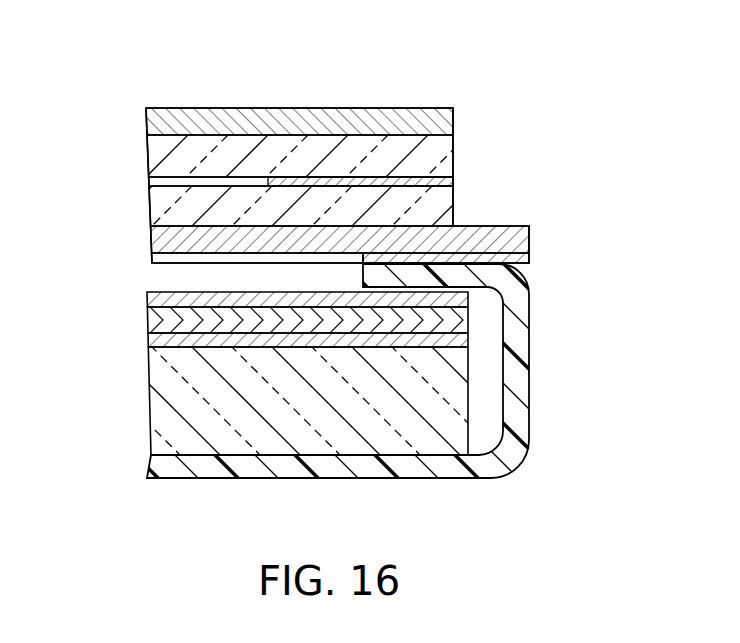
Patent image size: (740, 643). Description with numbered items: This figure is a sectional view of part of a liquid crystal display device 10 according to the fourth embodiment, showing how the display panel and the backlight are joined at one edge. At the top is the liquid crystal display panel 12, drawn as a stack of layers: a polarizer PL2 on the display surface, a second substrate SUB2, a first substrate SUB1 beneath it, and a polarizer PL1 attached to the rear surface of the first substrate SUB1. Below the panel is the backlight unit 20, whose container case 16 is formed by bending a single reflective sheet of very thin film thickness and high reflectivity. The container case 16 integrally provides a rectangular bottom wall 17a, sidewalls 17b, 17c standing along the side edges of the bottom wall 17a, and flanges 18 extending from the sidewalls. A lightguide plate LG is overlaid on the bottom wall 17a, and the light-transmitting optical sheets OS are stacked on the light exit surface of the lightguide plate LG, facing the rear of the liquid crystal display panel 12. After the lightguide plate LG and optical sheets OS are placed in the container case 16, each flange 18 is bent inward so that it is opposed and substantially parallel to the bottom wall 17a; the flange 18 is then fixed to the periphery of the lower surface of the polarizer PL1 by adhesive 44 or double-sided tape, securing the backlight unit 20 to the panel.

The liquid crystal display device 10 is at (461, 86).
The liquid crystal display panel 12 is at (199, 104).
The polarizer PL2 is at (146, 130).
The second substrate SUB2 is at (147, 160).
The lightguide plate LG is at (147, 183).
The first substrate SUB1 is at (149, 219).
The polarizer PL1 is at (151, 240).
The adhesive 44 is at (500, 248).
The flange 18 is at (472, 277).
The sidewall 17b is at (523, 388).
The sidewall 17c is at (370, 370).
The bottom wall 17a is at (332, 473).
The container case 16 is at (453, 489).
The backlight unit 20 is at (117, 468).
The optical sheets OS is at (137, 292).